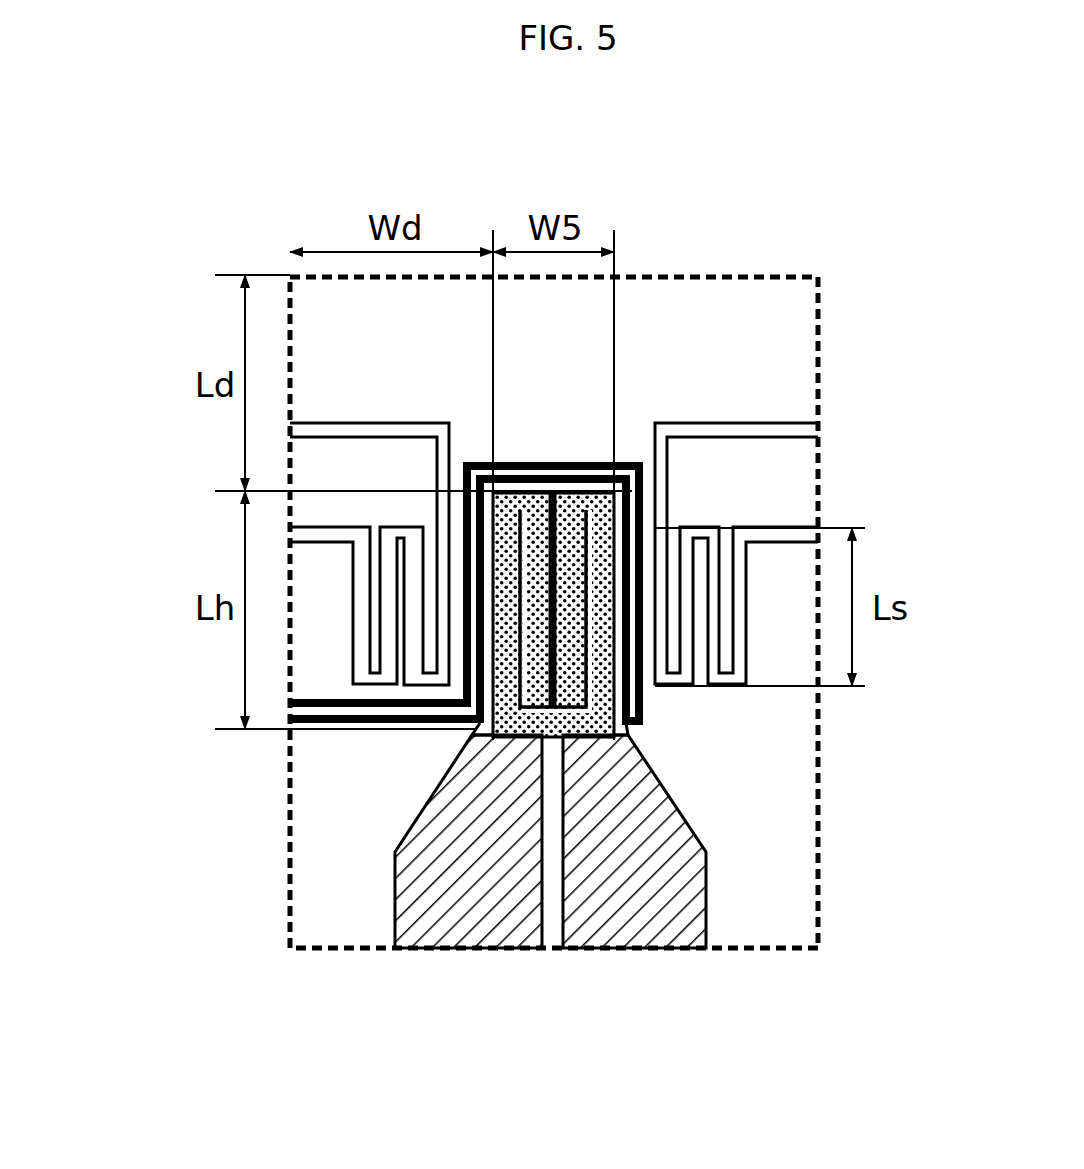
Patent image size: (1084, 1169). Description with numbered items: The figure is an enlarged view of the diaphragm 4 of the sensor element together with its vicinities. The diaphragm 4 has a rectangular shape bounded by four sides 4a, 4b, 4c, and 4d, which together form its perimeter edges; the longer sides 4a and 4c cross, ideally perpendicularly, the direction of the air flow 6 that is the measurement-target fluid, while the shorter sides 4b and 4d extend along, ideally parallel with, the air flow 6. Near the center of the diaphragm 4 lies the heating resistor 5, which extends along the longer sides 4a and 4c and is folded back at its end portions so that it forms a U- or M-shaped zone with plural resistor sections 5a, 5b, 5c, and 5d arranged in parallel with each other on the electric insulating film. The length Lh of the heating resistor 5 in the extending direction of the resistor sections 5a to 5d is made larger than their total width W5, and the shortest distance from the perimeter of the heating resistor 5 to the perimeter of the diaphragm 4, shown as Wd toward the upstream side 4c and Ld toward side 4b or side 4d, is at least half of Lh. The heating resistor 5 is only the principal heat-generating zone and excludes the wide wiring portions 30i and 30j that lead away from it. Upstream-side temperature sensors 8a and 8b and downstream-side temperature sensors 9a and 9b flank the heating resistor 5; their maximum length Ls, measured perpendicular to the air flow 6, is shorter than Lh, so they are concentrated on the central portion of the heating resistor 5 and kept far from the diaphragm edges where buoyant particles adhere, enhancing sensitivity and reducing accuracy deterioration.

The diaphragm 4 is at (552, 608).
The side 4a is at (818, 827).
The side 4b is at (743, 952).
The side 4c is at (290, 826).
The side 4d is at (763, 277).
The heating resistor 5 is at (553, 528).
The resistor section 5a is at (470, 738).
The resistor section 5b is at (540, 512).
The resistor section 5c is at (575, 512).
The resistor section 5d is at (625, 738).
The air flow 6 is at (132, 505).
The upstream-side temperature sensor 8a is at (393, 527).
The upstream-side temperature sensor 8b is at (408, 527).
The downstream-side temperature sensor 9a is at (712, 568).
The downstream-side temperature sensor 9b is at (720, 572).
The wiring portion 30i is at (462, 905).
The wiring portion 30j is at (638, 905).